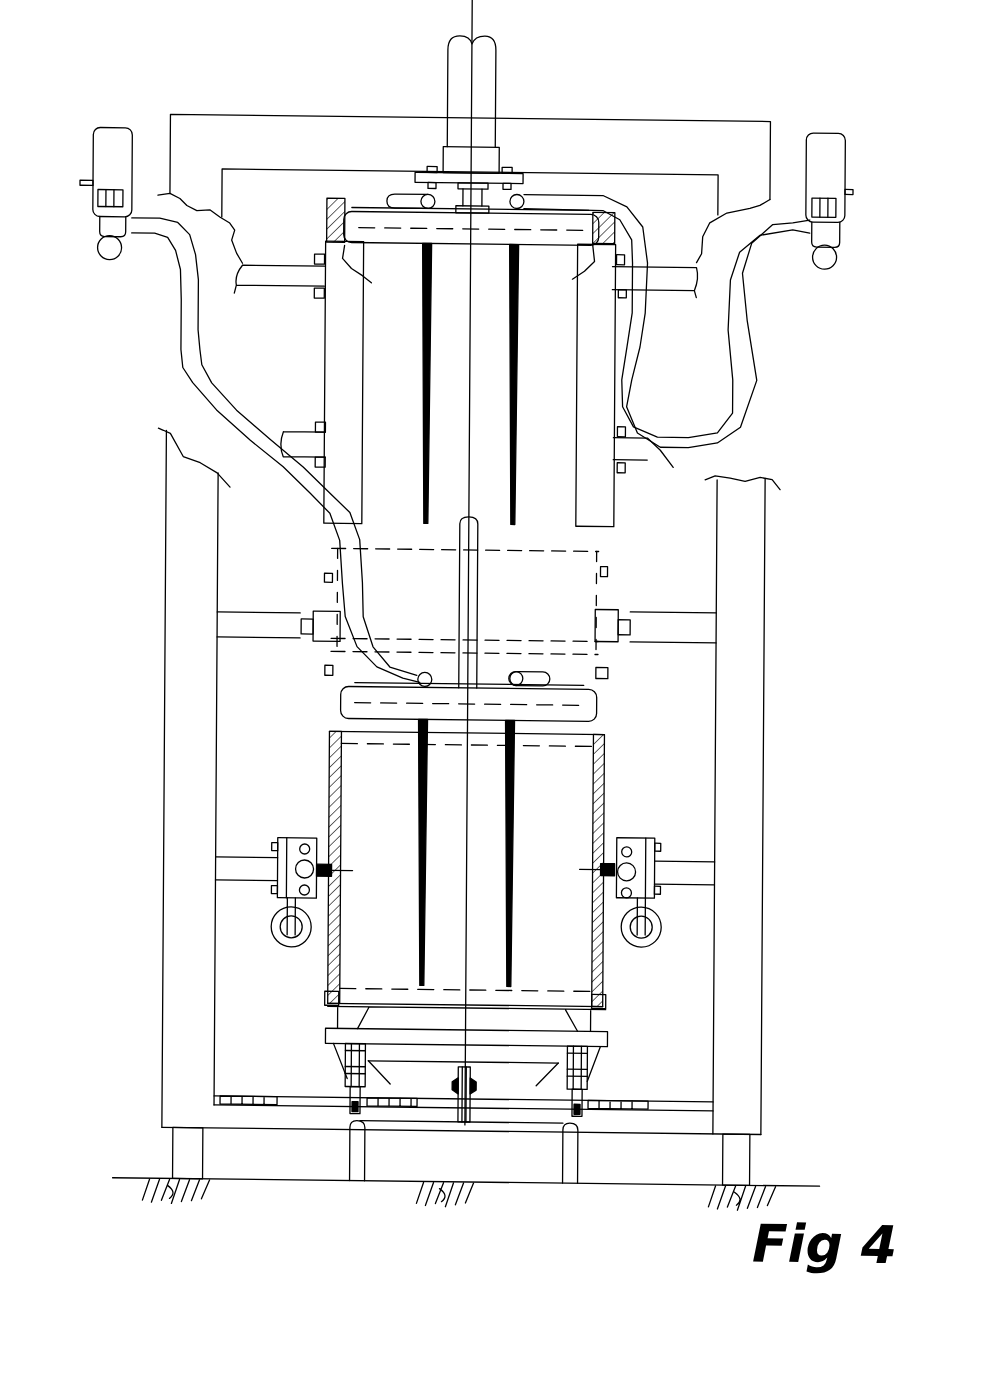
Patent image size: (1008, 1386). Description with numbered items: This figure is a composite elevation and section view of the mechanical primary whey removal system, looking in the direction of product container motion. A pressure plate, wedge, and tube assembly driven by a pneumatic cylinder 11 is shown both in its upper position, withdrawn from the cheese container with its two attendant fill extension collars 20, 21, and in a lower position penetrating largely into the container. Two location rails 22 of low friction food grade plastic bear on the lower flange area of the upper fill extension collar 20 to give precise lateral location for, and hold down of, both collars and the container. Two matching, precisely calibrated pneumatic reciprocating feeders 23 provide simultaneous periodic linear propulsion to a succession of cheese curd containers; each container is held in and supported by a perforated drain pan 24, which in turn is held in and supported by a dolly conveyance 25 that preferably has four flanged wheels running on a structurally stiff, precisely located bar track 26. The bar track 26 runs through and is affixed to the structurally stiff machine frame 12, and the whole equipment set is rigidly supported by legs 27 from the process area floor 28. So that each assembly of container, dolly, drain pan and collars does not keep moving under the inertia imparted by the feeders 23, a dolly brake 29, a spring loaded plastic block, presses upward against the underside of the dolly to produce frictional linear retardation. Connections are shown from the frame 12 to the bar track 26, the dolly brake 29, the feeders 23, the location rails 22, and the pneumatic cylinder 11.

The pneumatic cylinder 11 is at (502, 56).
The machine frame 12 is at (768, 1110).
The upper fill extension collar 20 is at (605, 560).
The fill extension collar 21 is at (606, 687).
The location rails 22 is at (323, 609).
The pneumatic reciprocating feeders 23 is at (301, 835).
The perforated drain pan 24 is at (614, 1009).
The dolly conveyance 25 is at (617, 1045).
The bar track 26 is at (585, 1111).
The legs 27 is at (761, 1154).
The process area floor 28 is at (137, 1176).
The dolly brake 29 is at (446, 1070).